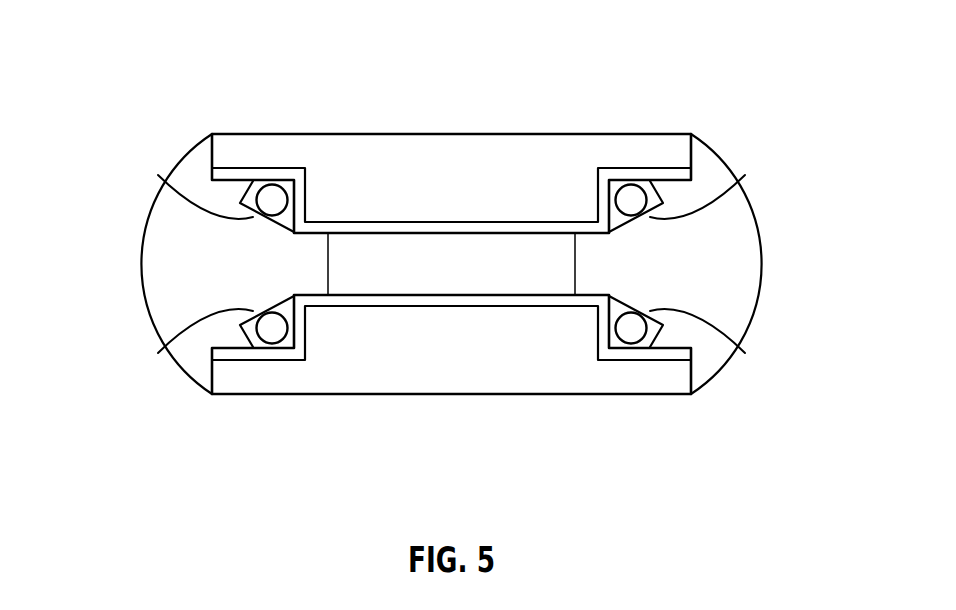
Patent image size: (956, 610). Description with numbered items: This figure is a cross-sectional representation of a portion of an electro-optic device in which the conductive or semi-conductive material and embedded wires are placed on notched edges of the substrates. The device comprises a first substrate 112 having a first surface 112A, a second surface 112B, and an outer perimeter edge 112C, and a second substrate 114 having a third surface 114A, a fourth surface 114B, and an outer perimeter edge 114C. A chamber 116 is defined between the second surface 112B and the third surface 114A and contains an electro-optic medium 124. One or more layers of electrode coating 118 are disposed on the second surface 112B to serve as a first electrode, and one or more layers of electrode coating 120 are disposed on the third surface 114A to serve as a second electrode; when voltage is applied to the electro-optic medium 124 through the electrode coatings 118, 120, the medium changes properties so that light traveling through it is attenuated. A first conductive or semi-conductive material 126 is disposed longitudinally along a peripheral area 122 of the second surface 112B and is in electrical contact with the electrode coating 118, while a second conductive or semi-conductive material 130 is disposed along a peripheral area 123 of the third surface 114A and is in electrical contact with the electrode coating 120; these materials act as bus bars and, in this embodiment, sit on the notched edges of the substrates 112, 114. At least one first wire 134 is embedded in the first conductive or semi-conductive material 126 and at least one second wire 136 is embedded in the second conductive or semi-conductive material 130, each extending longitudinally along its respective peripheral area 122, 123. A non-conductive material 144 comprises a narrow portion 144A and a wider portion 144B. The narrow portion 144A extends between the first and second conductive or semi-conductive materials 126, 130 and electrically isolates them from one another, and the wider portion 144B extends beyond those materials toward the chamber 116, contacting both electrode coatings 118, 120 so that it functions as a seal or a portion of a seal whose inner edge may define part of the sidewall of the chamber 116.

The first substrate 112 is at (317, 153).
The first surface 112A is at (343, 133).
The second surface 112B is at (387, 223).
The outer perimeter edge 112C is at (691, 152).
The second substrate 114 is at (357, 377).
The third surface 114A is at (392, 305).
The fourth surface 114B is at (436, 396).
The outer perimeter edge 114C is at (691, 375).
The chamber 116 is at (428, 257).
The electrode coating 118 is at (533, 228).
The electrode coating 120 is at (515, 297).
The peripheral area 122 is at (573, 222).
The peripheral area 123 is at (570, 305).
The electro-optic medium 124 is at (478, 257).
The first conductive or semi-conductive material 126 is at (273, 203).
The second conductive or semi-conductive material 130 is at (273, 327).
The first wire 134 is at (253, 208).
The second wire 136 is at (250, 320).
The non-conductive material 144 is at (225, 265).
The narrow portion 144A is at (157, 280).
The wider portion 144B is at (307, 265).